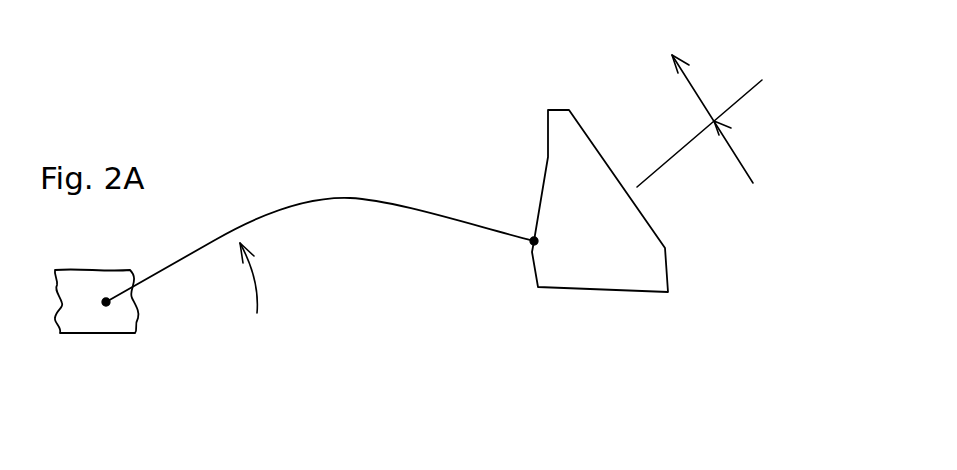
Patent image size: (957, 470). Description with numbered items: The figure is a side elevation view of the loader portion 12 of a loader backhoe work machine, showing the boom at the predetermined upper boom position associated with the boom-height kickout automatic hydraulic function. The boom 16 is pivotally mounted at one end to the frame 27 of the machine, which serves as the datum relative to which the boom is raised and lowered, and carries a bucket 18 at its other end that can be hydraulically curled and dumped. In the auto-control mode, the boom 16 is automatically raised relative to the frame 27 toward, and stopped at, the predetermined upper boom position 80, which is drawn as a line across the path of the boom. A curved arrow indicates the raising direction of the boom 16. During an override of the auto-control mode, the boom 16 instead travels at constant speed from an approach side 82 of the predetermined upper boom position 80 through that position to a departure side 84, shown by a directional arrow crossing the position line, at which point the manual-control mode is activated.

The loader portion 12 is at (220, 162).
The boom 16 is at (273, 213).
The bucket 18 is at (607, 275).
The frame 27 is at (92, 325).
The predetermined upper boom position 80 is at (740, 97).
The approach side 82 is at (740, 155).
The departure side 84 is at (695, 82).